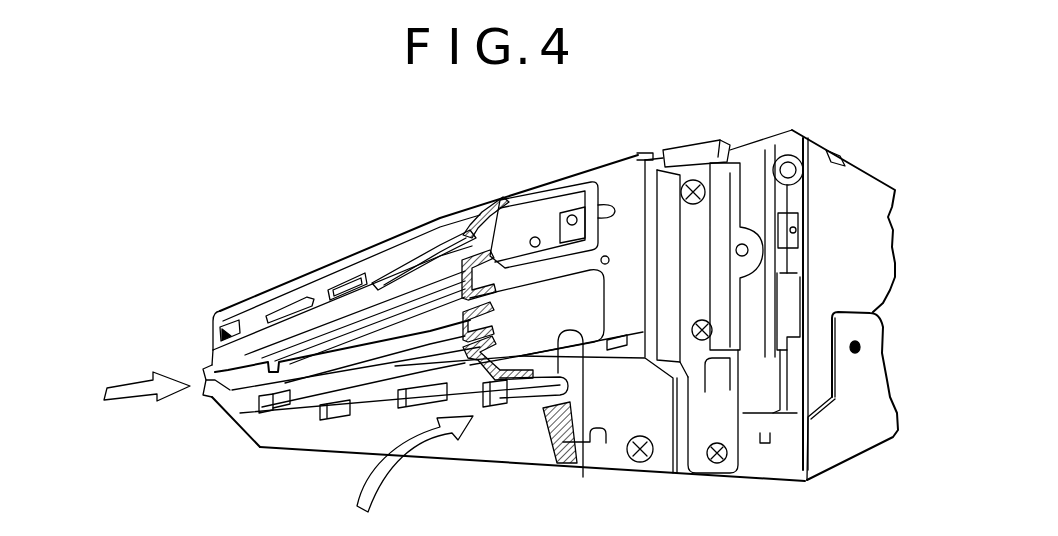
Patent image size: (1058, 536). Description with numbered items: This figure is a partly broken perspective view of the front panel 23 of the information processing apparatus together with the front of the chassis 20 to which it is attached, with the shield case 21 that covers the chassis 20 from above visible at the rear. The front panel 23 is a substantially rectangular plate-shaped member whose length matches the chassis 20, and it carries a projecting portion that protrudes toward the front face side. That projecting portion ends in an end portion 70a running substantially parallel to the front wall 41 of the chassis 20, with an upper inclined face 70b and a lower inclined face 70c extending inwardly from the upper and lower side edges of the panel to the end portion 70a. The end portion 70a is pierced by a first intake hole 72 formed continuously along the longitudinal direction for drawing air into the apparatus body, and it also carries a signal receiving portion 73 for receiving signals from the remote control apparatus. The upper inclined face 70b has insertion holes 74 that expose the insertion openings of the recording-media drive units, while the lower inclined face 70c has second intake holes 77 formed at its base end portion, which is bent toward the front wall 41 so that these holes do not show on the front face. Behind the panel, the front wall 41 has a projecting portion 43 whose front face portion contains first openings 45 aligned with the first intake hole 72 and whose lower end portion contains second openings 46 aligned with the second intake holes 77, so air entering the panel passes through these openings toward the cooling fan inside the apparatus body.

The chassis 20 is at (522, 194).
The shield case 21 is at (853, 182).
The front panel 23 is at (377, 247).
The front wall 41 is at (580, 175).
The projecting portion 43 is at (616, 185).
The first openings 45 is at (583, 340).
The second openings 46 is at (532, 383).
The end portion 70a is at (213, 362).
The upper inclined face 70b is at (223, 313).
The lower inclined face 70c is at (242, 406).
The first intake hole 72 is at (323, 367).
The signal receiving portion 73 is at (210, 402).
The insertion holes 74 is at (272, 317).
The second intake holes 77 is at (323, 415).